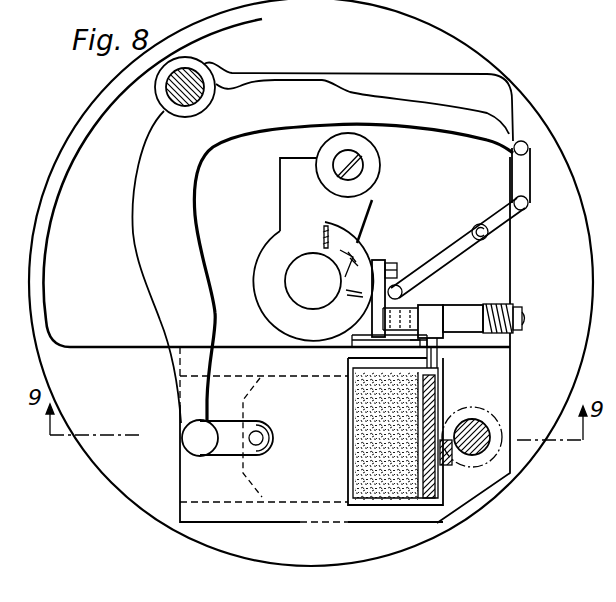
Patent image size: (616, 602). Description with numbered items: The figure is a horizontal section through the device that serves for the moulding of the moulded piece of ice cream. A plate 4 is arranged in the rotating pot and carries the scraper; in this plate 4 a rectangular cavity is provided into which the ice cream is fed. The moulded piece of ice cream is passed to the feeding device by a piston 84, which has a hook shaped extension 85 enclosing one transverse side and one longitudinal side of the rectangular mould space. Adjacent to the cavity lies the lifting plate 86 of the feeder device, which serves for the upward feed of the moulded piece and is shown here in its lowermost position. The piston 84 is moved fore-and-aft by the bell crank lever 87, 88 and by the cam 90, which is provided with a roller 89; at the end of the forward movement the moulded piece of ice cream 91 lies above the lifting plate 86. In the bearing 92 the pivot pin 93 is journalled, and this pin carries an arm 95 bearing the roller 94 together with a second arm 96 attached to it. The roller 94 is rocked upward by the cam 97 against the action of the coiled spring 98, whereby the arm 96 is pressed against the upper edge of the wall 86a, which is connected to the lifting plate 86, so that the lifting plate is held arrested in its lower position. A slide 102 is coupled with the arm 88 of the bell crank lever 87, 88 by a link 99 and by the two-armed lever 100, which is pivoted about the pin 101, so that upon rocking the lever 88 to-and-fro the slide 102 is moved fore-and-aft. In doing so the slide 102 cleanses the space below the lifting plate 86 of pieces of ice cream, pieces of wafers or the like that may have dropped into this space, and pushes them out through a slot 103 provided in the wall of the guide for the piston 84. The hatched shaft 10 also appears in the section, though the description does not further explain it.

The plate 4 is at (538, 124).
The shaft 10 is at (487, 447).
The piston 84 is at (255, 488).
The hook shaped extension 85 is at (440, 493).
The lifting plate 86 is at (397, 378).
The wall 86a is at (433, 407).
The bell crank lever 87 is at (152, 257).
The arm of the bell crank lever 88 is at (420, 107).
The roller 89 is at (378, 160).
The cam 90 is at (372, 203).
The moulded piece of ice cream 91 is at (410, 400).
The bearing 92 is at (460, 312).
The pivot pin 93 is at (523, 320).
The roller 94 is at (367, 258).
The arm 95 is at (372, 302).
The second arm 96 is at (440, 368).
The cam 97 is at (323, 228).
The coiled spring 98 is at (503, 307).
The link 99 is at (529, 170).
The two-armed lever 100 is at (443, 245).
The pin 101 is at (490, 232).
The slide 102 is at (420, 345).
The slot 103 is at (348, 516).